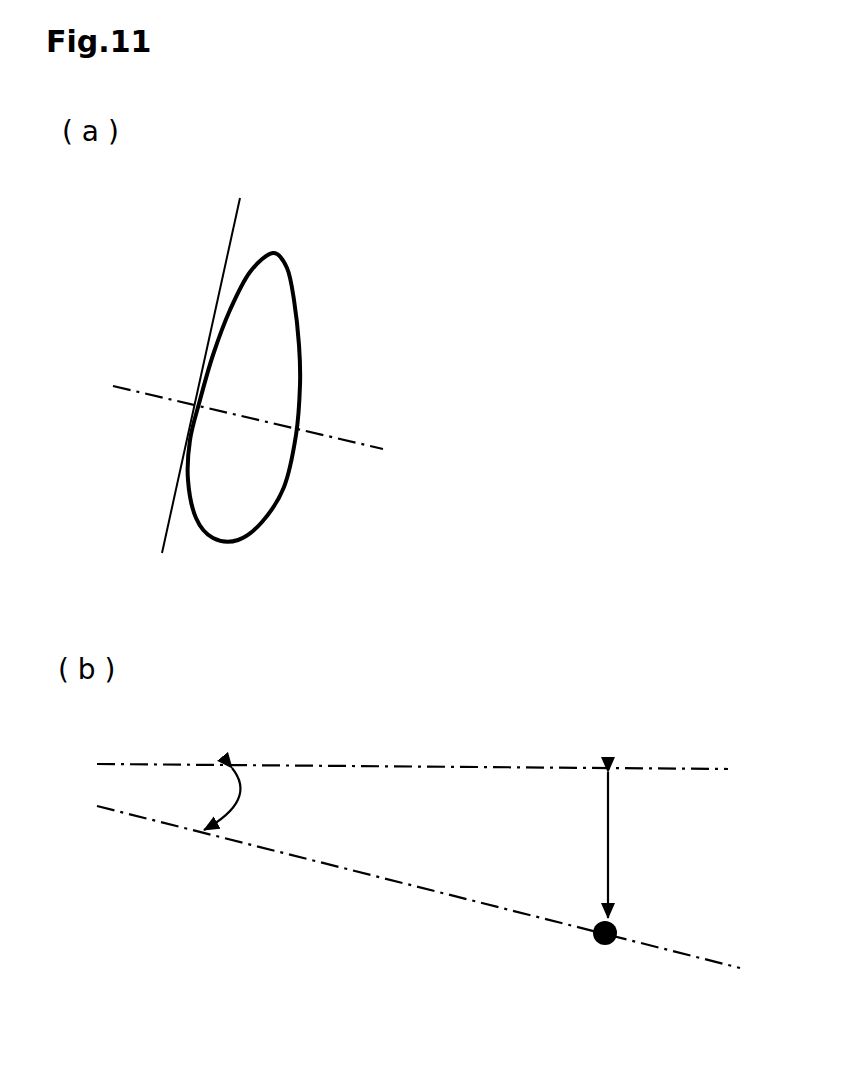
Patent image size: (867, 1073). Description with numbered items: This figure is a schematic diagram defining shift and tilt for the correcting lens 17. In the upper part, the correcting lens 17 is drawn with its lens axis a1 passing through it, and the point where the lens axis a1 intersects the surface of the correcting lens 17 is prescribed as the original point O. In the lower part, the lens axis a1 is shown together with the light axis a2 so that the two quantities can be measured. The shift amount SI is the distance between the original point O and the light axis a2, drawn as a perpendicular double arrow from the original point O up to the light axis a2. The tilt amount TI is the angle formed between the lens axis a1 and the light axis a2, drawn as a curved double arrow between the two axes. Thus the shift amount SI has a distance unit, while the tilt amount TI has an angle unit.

The correcting lens 17 is at (272, 513).
The original point O is at (189, 390).
The lens axis a1 is at (417, 679).
The light axis a2 is at (415, 767).
The tilt amount TI is at (249, 799).
The shift amount SI is at (633, 845).